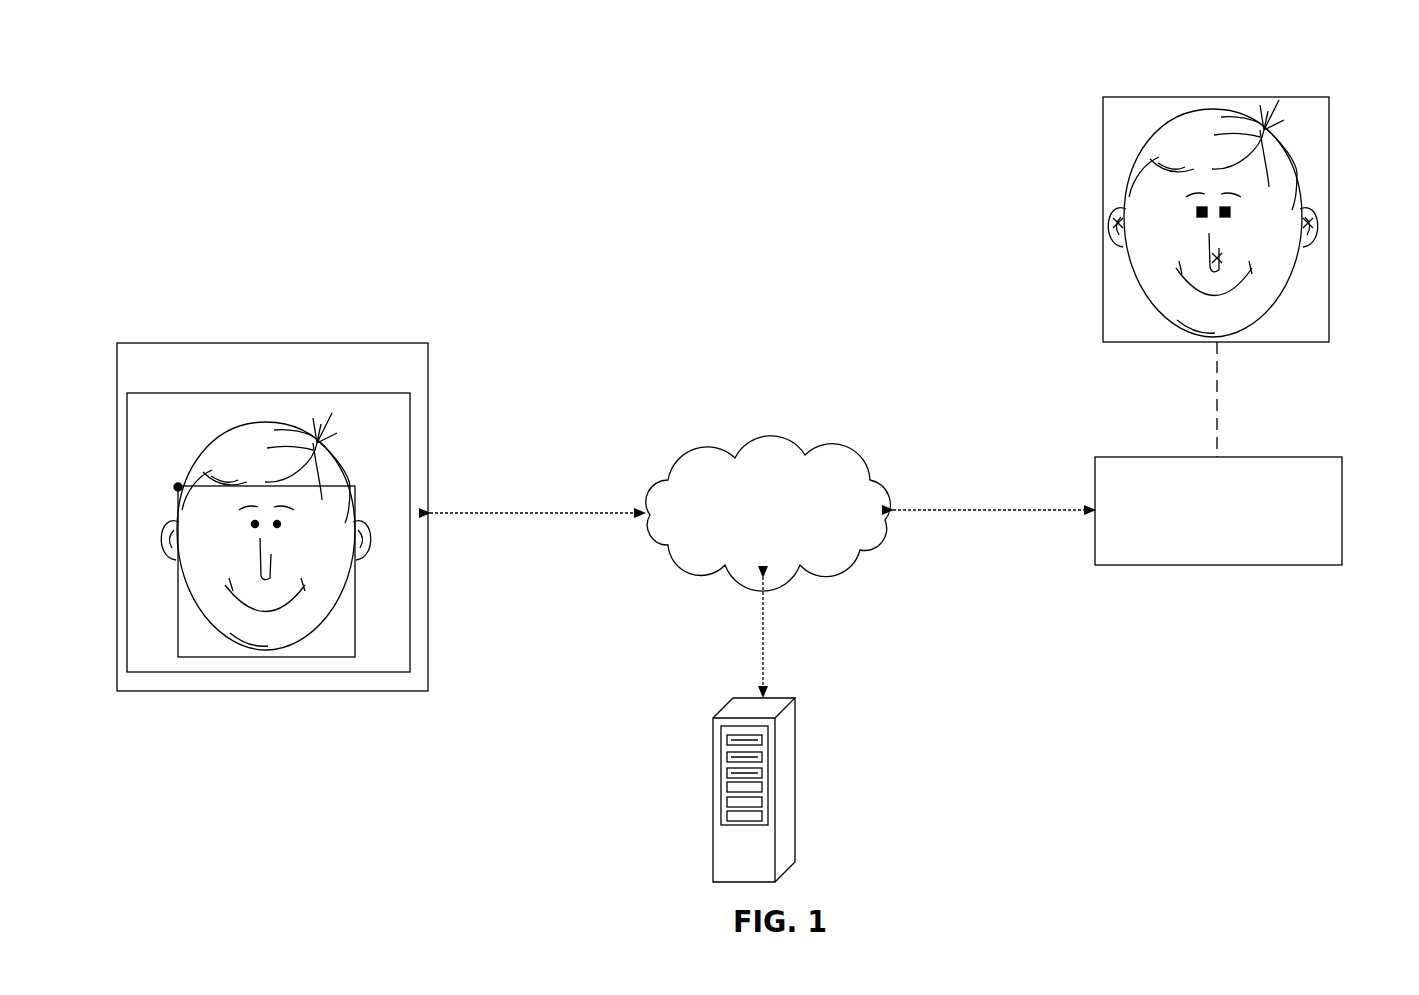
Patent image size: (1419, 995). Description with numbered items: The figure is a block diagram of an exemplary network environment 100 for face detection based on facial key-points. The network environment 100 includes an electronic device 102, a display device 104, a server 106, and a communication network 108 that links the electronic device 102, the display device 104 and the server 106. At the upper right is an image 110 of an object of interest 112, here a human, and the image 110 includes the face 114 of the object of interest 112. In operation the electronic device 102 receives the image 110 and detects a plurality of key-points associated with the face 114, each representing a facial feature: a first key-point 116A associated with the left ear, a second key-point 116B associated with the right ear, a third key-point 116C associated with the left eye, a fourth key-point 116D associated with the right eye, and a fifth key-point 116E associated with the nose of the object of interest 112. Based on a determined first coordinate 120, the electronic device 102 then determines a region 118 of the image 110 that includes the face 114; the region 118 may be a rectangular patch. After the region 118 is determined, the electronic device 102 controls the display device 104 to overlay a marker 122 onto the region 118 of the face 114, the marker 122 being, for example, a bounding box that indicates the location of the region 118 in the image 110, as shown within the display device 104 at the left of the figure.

The network environment 100 is at (155, 103).
The electronic device 102 is at (1218, 453).
The display device 104 is at (272, 517).
The server 106 is at (797, 800).
The communication network 108 is at (768, 513).
The image 110 is at (1103, 275).
The object of interest 112 is at (1162, 155).
The face 114 is at (1251, 223).
The first key-point 116A is at (1071, 242).
The second key-point 116B is at (1352, 213).
The third key-point 116C is at (1112, 195).
The fourth key-point 116D is at (1311, 182).
The fifth key-point 116E is at (1300, 295).
The region 118 is at (280, 580).
The first coordinate 120 is at (146, 393).
The marker 122 is at (266, 627).